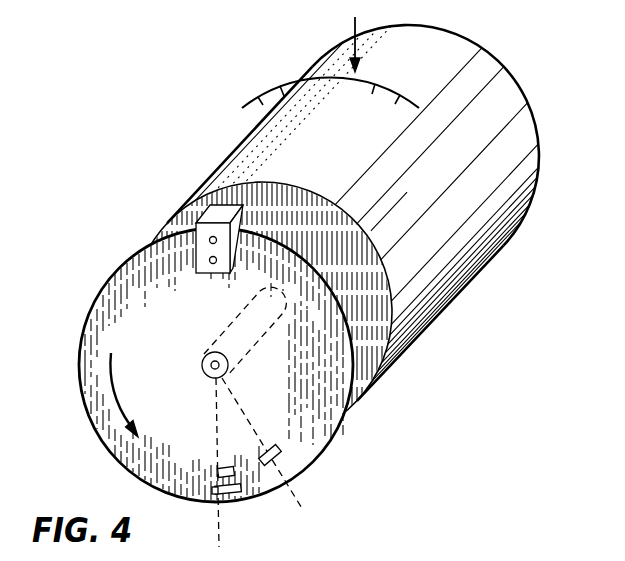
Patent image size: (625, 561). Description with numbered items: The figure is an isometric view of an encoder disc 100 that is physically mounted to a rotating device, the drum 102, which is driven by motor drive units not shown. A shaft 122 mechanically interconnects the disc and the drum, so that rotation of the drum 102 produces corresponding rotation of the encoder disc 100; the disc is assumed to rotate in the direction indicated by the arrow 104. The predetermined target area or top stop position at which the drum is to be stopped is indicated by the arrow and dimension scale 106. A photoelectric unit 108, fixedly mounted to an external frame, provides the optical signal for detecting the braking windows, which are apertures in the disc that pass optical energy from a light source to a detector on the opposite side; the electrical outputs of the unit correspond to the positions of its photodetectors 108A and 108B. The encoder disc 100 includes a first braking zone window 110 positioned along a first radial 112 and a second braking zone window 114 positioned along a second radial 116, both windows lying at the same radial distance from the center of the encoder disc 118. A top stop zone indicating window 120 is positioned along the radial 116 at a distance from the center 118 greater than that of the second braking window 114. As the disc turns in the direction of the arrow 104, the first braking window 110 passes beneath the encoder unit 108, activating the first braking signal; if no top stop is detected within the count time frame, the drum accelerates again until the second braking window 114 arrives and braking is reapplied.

The encoder disc 100 is at (80, 362).
The drum 102 is at (465, 283).
The arrow 104 is at (113, 366).
The arrow and dimension scale 106 is at (323, 50).
The photoelectric unit 108 is at (245, 208).
The photodetector 108A is at (208, 245).
The photodetector 108B is at (208, 265).
The first braking zone window 110 is at (281, 454).
The first radial 112 is at (233, 397).
The second braking zone window 114 is at (234, 475).
The second radial 116 is at (213, 428).
The center of the encoder disc 118 is at (202, 366).
The top stop zone indicating window 120 is at (228, 495).
The shaft 122 is at (252, 346).